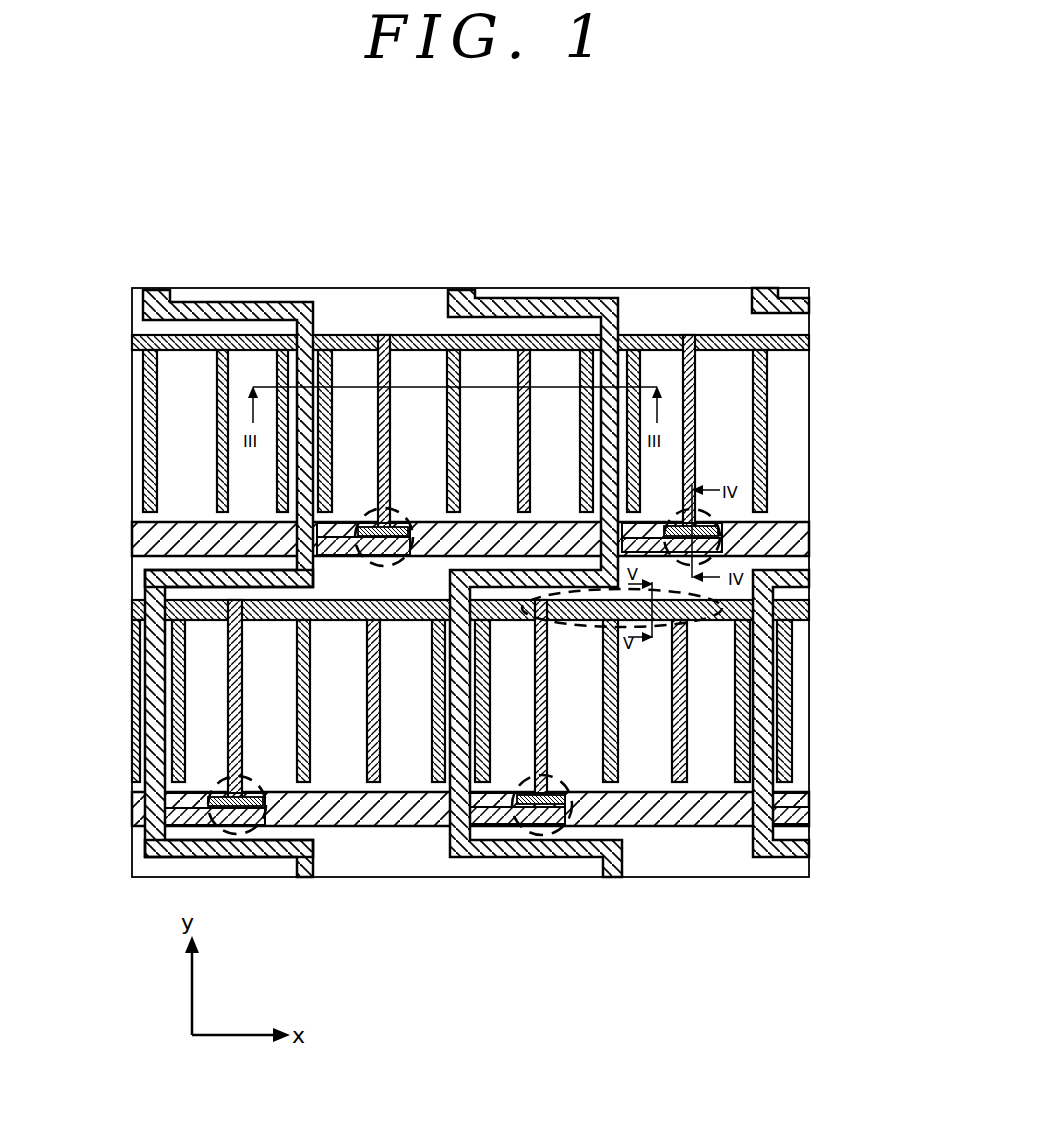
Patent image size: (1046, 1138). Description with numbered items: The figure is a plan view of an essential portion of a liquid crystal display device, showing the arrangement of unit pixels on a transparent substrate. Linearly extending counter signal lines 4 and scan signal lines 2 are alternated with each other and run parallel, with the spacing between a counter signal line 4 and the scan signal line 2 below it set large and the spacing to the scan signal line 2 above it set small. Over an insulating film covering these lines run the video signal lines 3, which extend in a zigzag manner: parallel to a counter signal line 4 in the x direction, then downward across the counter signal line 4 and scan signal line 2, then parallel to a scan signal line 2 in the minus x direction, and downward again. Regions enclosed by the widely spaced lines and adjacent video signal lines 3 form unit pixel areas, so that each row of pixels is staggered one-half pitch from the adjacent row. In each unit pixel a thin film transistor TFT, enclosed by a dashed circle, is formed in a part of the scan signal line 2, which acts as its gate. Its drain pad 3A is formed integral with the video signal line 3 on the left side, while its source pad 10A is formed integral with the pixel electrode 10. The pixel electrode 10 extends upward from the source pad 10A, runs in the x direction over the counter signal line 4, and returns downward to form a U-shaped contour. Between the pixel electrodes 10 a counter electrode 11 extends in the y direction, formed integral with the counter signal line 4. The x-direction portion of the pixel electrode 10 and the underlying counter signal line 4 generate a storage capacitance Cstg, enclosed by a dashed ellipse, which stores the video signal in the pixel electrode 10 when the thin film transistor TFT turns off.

The scan signal line 2 is at (132, 533).
The video signal line 3 is at (245, 287).
The drain pad 3A is at (365, 563).
The counter signal line 4 is at (663, 337).
The pixel electrode 10 is at (373, 288).
The source pad 10A is at (408, 522).
The counter electrode 11 is at (332, 288).
The thin film transistor TFT is at (362, 512).
The storage capacitance Cstg is at (693, 627).